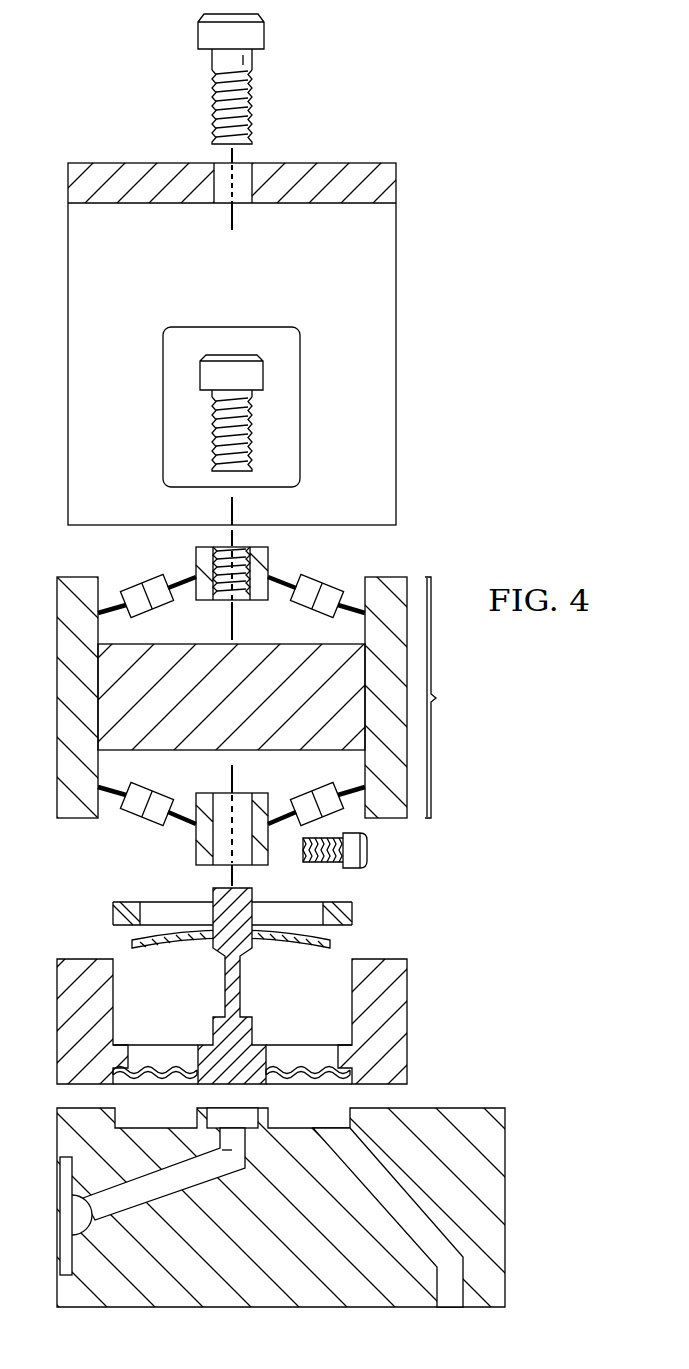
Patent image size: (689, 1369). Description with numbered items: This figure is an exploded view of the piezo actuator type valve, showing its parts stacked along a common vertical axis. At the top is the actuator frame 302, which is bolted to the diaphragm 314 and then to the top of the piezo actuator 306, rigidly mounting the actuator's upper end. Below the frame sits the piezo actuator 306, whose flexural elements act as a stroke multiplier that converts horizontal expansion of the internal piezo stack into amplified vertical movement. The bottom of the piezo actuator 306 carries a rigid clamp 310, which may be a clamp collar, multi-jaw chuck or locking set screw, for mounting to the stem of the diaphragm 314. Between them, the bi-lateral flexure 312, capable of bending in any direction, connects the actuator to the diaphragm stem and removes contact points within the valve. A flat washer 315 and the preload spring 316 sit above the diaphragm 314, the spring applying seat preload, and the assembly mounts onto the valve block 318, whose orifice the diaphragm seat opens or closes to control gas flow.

The actuator frame 302 is at (396, 366).
The piezo actuator 306 is at (267, 683).
The rigid clamp 310 is at (196, 838).
The bi-lateral flexure 312 is at (240, 990).
The diaphragm 314 is at (407, 1030).
The flat washer 315 is at (352, 913).
The preload spring 316 is at (333, 943).
The valve block 318 is at (505, 1215).